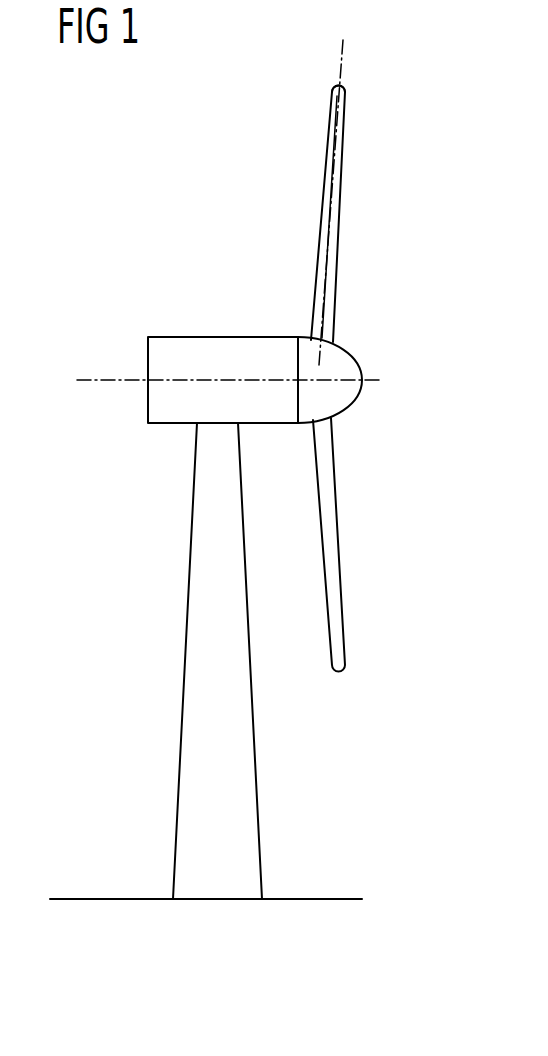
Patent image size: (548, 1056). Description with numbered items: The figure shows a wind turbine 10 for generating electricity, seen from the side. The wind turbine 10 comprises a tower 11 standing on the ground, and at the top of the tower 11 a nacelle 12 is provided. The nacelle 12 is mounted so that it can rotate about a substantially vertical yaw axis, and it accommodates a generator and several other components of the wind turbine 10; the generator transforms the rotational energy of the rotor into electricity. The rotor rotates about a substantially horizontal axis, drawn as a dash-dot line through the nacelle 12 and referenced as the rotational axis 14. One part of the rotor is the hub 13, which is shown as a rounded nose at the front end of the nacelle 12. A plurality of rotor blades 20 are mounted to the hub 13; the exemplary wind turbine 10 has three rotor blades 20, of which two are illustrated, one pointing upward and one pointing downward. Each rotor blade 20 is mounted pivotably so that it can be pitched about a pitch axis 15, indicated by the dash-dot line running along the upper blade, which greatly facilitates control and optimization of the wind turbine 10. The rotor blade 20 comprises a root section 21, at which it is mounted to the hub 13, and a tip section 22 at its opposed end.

The wind turbine 10 is at (243, 469).
The tower 11 is at (241, 828).
The nacelle 12 is at (196, 336).
The hub 13 is at (359, 361).
The rotational axis of the rotor 14 is at (92, 378).
The pitch axis 15 is at (343, 55).
The rotor blade 20 is at (366, 207).
The root section 21 is at (327, 333).
The tip section 22 is at (347, 92).